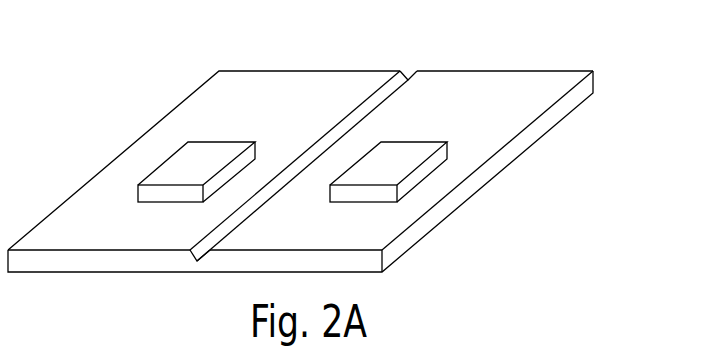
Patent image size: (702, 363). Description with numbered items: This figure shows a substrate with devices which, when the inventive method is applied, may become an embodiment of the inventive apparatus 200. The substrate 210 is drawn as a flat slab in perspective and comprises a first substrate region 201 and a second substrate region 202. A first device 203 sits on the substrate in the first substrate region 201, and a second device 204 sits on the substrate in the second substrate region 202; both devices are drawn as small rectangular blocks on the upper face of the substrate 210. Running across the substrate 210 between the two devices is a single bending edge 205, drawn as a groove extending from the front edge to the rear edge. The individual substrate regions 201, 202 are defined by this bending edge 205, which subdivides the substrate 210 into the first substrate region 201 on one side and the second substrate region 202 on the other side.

The apparatus 200 is at (309, 137).
The first substrate region 201 is at (268, 98).
The second substrate region 202 is at (473, 136).
The first device 203 is at (163, 168).
The second device 204 is at (407, 170).
The bending edge 205 is at (383, 98).
The substrate 210 is at (497, 98).